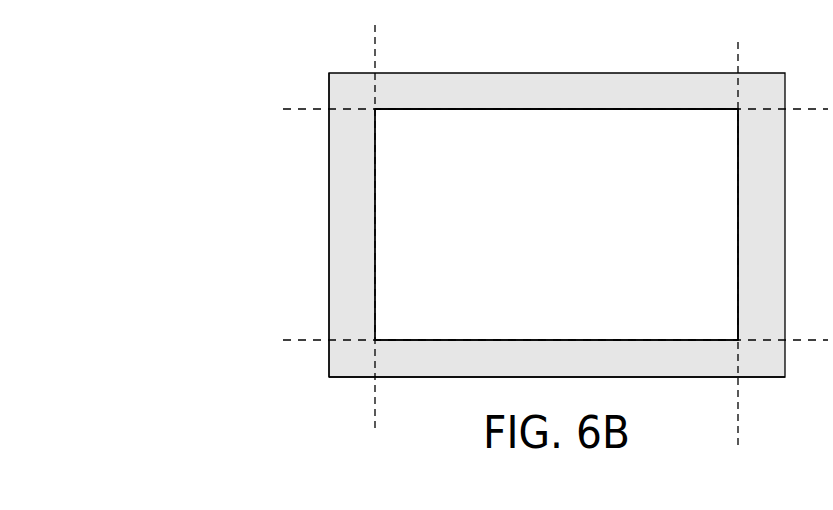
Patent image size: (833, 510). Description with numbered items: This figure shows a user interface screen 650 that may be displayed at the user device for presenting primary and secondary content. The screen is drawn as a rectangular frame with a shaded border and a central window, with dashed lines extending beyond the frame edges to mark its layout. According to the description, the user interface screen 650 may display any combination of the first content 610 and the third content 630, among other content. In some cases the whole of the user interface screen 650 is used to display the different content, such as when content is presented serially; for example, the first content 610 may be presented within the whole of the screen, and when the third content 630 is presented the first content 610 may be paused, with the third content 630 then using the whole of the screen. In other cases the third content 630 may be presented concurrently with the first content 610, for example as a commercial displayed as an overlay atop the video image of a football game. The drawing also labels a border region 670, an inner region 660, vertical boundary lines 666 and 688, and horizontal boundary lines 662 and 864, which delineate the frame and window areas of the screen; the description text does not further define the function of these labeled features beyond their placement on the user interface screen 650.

The user interface screen 650 is at (172, 163).
The third content 630 is at (348, 210).
The opaque border region 670 is at (345, 258).
The first content 610 is at (498, 186).
The transparent viewing region 660 is at (490, 255).
The left boundary line 666 is at (355, 53).
The right boundary line 688 is at (738, 42).
The upper boundary line 662 is at (318, 108).
The lower boundary line 864 is at (305, 340).